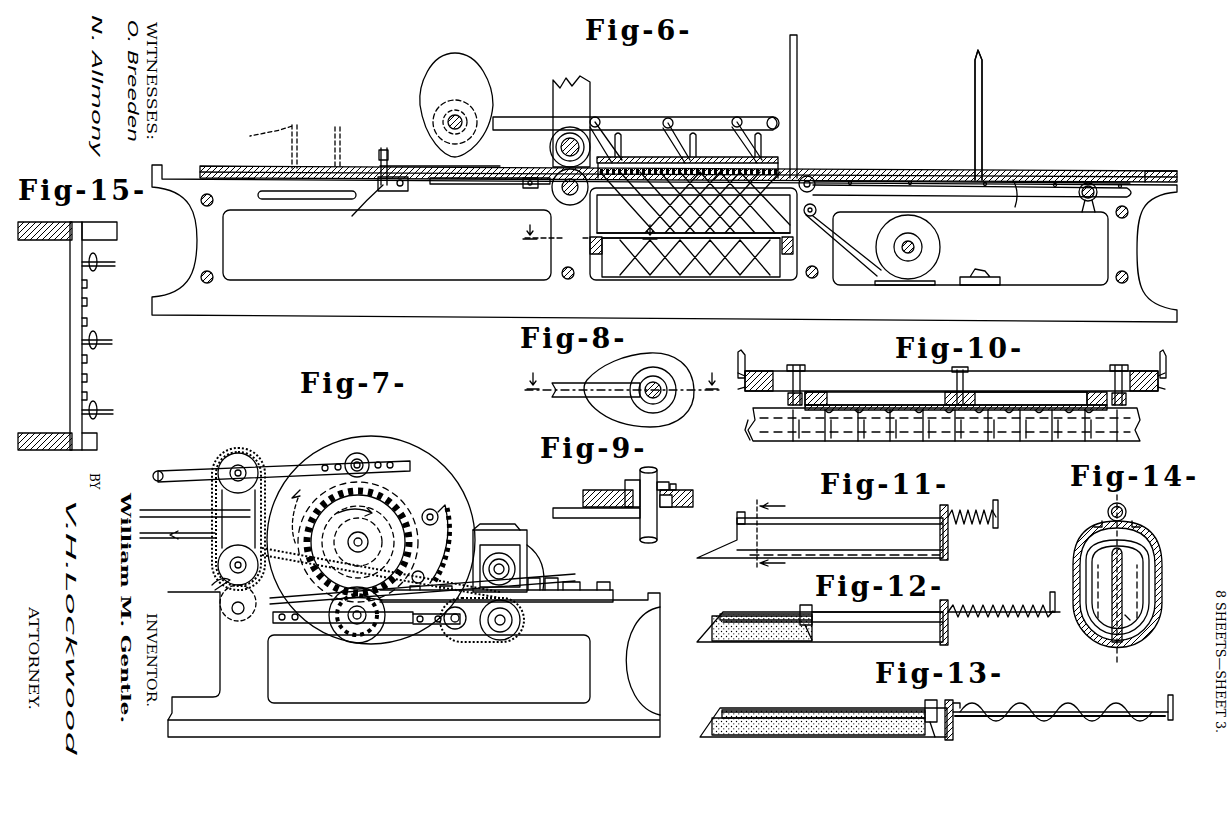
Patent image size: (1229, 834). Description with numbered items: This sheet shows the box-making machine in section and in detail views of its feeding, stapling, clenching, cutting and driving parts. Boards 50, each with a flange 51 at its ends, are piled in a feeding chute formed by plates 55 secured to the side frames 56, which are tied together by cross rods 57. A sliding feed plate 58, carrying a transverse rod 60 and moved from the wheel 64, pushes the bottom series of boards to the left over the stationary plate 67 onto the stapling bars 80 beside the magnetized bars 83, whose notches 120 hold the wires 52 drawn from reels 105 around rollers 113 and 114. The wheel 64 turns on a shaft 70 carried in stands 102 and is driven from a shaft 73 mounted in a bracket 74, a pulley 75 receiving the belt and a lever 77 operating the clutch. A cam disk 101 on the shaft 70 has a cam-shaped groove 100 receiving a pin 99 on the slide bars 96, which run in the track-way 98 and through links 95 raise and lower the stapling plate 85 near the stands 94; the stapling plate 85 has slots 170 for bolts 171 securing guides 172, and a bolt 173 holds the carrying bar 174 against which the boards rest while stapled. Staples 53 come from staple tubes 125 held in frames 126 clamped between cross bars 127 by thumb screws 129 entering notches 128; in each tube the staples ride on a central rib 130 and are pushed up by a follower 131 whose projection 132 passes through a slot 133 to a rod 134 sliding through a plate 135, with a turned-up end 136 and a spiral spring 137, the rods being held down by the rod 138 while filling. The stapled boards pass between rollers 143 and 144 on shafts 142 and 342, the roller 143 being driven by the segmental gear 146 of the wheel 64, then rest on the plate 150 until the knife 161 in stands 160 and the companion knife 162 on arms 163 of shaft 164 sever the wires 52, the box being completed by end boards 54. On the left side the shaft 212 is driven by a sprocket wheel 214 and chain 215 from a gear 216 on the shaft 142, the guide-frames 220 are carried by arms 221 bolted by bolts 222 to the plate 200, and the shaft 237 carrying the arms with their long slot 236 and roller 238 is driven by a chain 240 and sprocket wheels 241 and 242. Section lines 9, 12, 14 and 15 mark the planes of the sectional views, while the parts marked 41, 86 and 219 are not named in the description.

In FIG. 8, the section line 9 is at (622, 389).
In FIG. 14, the section line 12 is at (1117, 581).
In FIG. 11, the section line 14 is at (765, 533).
In FIG. 6, the section line 15 is at (592, 240).
In FIG. 6, the post 41 is at (780, 136).
In FIG. 6, the boards 50 is at (298, 128).
In FIG. 10, the boards 50 is at (880, 405).
In FIG. 10, the flange 51 is at (818, 392).
In FIG. 6, the wires 52 is at (872, 262).
In FIG. 12, the staples 53 is at (768, 614).
In FIG. 13, the staples 53 is at (775, 712).
In FIG. 6, the end boards 54 is at (1075, 188).
In FIG. 6, the feeding chute 55 is at (980, 112).
In FIG. 6, the side frames 56 is at (797, 125).
In FIG. 15, the side frames 56 is at (117, 228).
In FIG. 7, the side frames 56 is at (230, 666).
In FIG. 6, the cross rods 57 is at (812, 278).
In FIG. 6, the sliding feed plate 58 is at (1075, 170).
In FIG. 6, the transverse rod 60 is at (1089, 201).
In FIG. 7, the wheel 64 is at (455, 482).
In FIG. 6, the stationary plate 67 is at (1016, 207).
In FIG. 7, the shaft 70 is at (364, 538).
In FIG. 8, the shaft 70 is at (655, 380).
In FIG. 9, the shaft 70 is at (656, 470).
In FIG. 7, the shaft 73 is at (352, 628).
In FIG. 7, the bracket 74 is at (318, 620).
In FIG. 7, the pulley 75 is at (372, 635).
In FIG. 7, the lever 77 is at (560, 582).
In FIG. 6, the stapling bars 80 is at (808, 176).
In FIG. 10, the stapling bars 80 is at (748, 430).
In FIG. 10, the magnetized bars 83 is at (1000, 430).
In FIG. 10, the stapling plate 85 is at (855, 372).
In FIG. 6, the bar 86 is at (658, 158).
In FIG. 7, the stands 94 is at (238, 518).
In FIG. 6, the links 95 is at (600, 118).
In FIG. 10, the links 95 is at (744, 352).
In FIG. 6, the slide bars 96 is at (518, 117).
In FIG. 7, the slide bars 96 is at (177, 535).
In FIG. 8, the slide bars 96 is at (575, 383).
In FIG. 9, the slide bars 96 is at (580, 518).
In FIG. 6, the track-way 98 is at (774, 117).
In FIG. 9, the pin 99 is at (625, 488).
In FIG. 8, the cam shaped groove 100 is at (667, 378).
In FIG. 9, the cam shaped groove 100 is at (666, 508).
In FIG. 6, the cam disk 101 is at (478, 90).
In FIG. 7, the cam disk 101 is at (380, 492).
In FIG. 8, the cam disk 101 is at (639, 390).
In FIG. 9, the cam disk 101 is at (690, 488).
In FIG. 6, the stands 102 is at (440, 163).
In FIG. 6, the reels 105 is at (936, 236).
In FIG. 6, the roller 113 is at (816, 210).
In FIG. 6, the roller 114 is at (825, 172).
In FIG. 10, the notches 120 is at (945, 429).
In FIG. 6, the staple tubes 125 is at (645, 205).
In FIG. 11, the staple tubes 125 is at (870, 540).
In FIG. 12, the staple tubes 125 is at (1052, 605).
In FIG. 14, the staple tubes 125 is at (1076, 590).
In FIG. 6, the frames 126 is at (790, 210).
In FIG. 15, the frames 126 is at (116, 266).
In FIG. 6, the cross bars 127 is at (590, 245).
In FIG. 15, the cross bars 127 is at (70, 310).
In FIG. 15, the notches 128 is at (88, 303).
In FIG. 15, the thumb screws 129 is at (96, 264).
In FIG. 12, the central partition-like rib 130 is at (820, 627).
In FIG. 13, the central partition-like rib 130 is at (830, 730).
In FIG. 14, the central partition-like rib 130 is at (1112, 568).
In FIG. 12, the follower 131 is at (810, 640).
In FIG. 13, the follower 131 is at (932, 737).
In FIG. 14, the follower 131 is at (1086, 550).
In FIG. 11, the projection 132 is at (740, 512).
In FIG. 12, the projection 132 is at (813, 606).
In FIG. 13, the projection 132 is at (924, 702).
In FIG. 14, the projection 132 is at (1105, 515).
In FIG. 12, the slot 133 is at (752, 615).
In FIG. 13, the slot 133 is at (860, 710).
In FIG. 11, the rod 134 is at (823, 518).
In FIG. 12, the rod 134 is at (895, 612).
In FIG. 13, the rod 134 is at (1050, 712).
In FIG. 14, the rod 134 is at (1125, 512).
In FIG. 11, the plate 135 is at (952, 525).
In FIG. 12, the plate 135 is at (955, 613).
In FIG. 13, the plate 135 is at (955, 700).
In FIG. 11, the turned up end 136 is at (998, 505).
In FIG. 12, the turned up end 136 is at (1052, 612).
In FIG. 13, the turned up end 136 is at (1168, 702).
In FIG. 14, the turned up end 136 is at (1086, 624).
In FIG. 11, the spiral spring 137 is at (975, 525).
In FIG. 12, the spiral spring 137 is at (1003, 605).
In FIG. 13, the spiral spring 137 is at (1060, 705).
In FIG. 6, the rod 138 is at (628, 280).
In FIG. 6, the shaft 142 is at (570, 138).
In FIG. 7, the shaft 142 is at (225, 592).
In FIG. 6, the roller 143 is at (560, 145).
In FIG. 6, the lower roller 144 is at (535, 188).
In FIG. 7, the lower roller 144 is at (218, 615).
In FIG. 7, the segmental gear 146 is at (452, 520).
In FIG. 6, the plate 150 is at (467, 184).
In FIG. 6, the stand 160 is at (390, 156).
In FIG. 6, the knife 161 is at (379, 152).
In FIG. 6, the companion knife 162 is at (365, 206).
In FIG. 6, the arms 163 is at (392, 189).
In FIG. 6, the shaft 164 is at (405, 185).
In FIG. 10, the slots 170 is at (1048, 380).
In FIG. 10, the bolts 171 is at (795, 365).
In FIG. 10, the guides 172 is at (788, 400).
In FIG. 10, the bolt 173 is at (950, 386).
In FIG. 10, the carrying bar 174 is at (1031, 384).
In FIG. 7, the plate 200 is at (600, 594).
In FIG. 7, the shaft 212 is at (522, 620).
In FIG. 7, the sprocket wheel 214 is at (500, 640).
In FIG. 7, the sprocket chain 215 is at (458, 630).
In FIG. 7, the gear 216 is at (312, 505).
In FIG. 7, the pulley 219 is at (510, 560).
In FIG. 7, the guide-frames 220 is at (505, 532).
In FIG. 7, the arms 221 is at (535, 552).
In FIG. 7, the bolts 222 is at (580, 585).
In FIG. 7, the long slot 236 is at (180, 472).
In FIG. 7, the shaft 237 is at (248, 462).
In FIG. 7, the roller 238 is at (362, 456).
In FIG. 7, the chain 240 is at (195, 505).
In FIG. 7, the sprocket wheel 241 is at (230, 452).
In FIG. 7, the sprocket wheel 242 is at (218, 558).
In FIG. 6, the shaft 342 is at (570, 195).
In FIG. 7, the shaft 342 is at (238, 614).